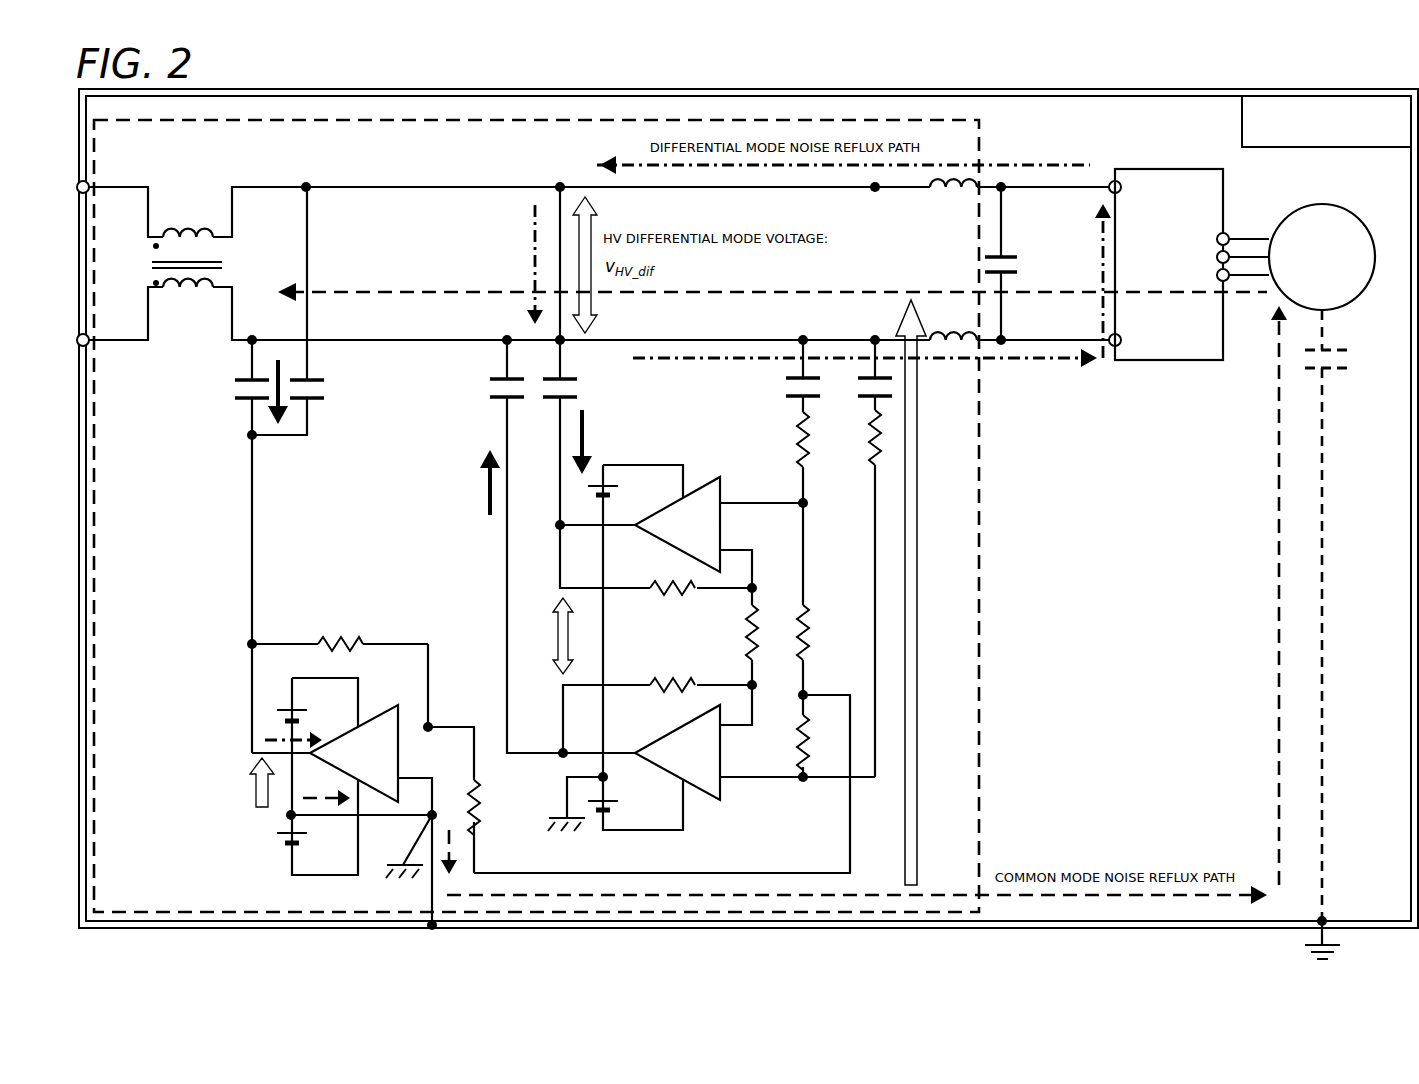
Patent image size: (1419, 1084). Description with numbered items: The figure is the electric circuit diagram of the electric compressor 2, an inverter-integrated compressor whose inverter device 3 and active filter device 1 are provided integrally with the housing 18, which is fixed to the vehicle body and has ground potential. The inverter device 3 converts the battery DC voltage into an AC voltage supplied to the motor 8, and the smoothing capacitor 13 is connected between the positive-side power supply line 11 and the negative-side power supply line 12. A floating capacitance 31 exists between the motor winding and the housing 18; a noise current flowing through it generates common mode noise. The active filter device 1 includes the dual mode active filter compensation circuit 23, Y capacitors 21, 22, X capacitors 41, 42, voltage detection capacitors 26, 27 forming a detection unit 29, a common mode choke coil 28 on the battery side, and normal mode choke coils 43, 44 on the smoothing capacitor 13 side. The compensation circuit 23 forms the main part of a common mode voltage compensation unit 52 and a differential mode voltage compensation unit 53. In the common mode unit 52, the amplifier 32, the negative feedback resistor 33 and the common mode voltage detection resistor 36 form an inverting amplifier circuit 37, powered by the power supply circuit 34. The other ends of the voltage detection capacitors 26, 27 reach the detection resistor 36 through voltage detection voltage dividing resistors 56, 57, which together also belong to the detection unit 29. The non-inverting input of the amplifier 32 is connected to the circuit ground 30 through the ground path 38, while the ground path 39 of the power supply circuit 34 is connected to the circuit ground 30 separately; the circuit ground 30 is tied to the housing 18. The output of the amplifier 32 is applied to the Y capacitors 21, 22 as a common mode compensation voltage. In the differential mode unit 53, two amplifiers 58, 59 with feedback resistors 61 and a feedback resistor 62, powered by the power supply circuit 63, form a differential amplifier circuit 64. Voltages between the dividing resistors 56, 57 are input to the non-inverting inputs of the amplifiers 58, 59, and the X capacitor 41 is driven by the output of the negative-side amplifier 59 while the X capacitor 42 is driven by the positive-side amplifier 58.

The active filter device 1 is at (100, 470).
The electric compressor 2 is at (462, 78).
The inverter device 3 is at (1152, 169).
The motor 8 is at (1326, 205).
The positive-side power supply line 11 is at (400, 187).
The negative-side power supply line 12 is at (330, 340).
The smoothing capacitor 13 is at (1017, 272).
The housing 18 is at (1160, 88).
The Y capacitor 21 is at (318, 404).
The Y capacitor 22 is at (240, 405).
The dual mode active filter compensation circuit 23 is at (208, 602).
The voltage detection capacitor 26 is at (884, 398).
The voltage detection capacitor 27 is at (812, 400).
The common mode choke coil 28 is at (182, 300).
The detection unit 29 is at (884, 605).
The circuit ground 30 is at (398, 880).
The floating capacitance 31 is at (1316, 372).
The amplifier 32 is at (380, 706).
The negative feedback resistor 33 is at (318, 642).
The power supply circuit 34 is at (286, 800).
The common mode voltage detection resistor 36 is at (480, 775).
The inverting amplifier circuit 37 is at (412, 753).
The ground path 38 is at (432, 780).
The ground path 39 is at (398, 822).
The X capacitor 41 is at (562, 378).
The X capacitor 42 is at (492, 378).
The normal mode choke coil 43 is at (968, 180).
The normal mode choke coil 44 is at (972, 345).
The common mode voltage compensation unit 52 is at (233, 838).
The differential mode voltage compensation unit 53 is at (550, 518).
The voltage detection voltage dividing resistor 56 is at (793, 430).
The voltage detection voltage dividing resistor 57 is at (812, 632).
The amplifier 58 is at (724, 753).
The amplifier 59 is at (724, 525).
The feedback resistor 61 is at (640, 590).
The feedback resistor 62 is at (760, 612).
The power supply circuit 63 is at (590, 772).
The differential amplifier circuit 64 is at (555, 676).